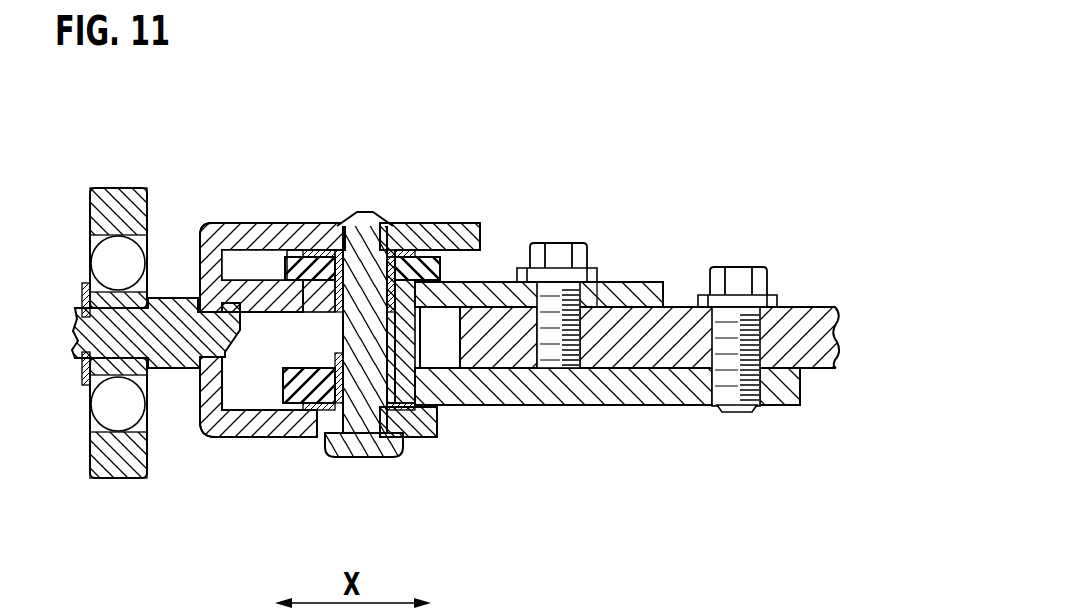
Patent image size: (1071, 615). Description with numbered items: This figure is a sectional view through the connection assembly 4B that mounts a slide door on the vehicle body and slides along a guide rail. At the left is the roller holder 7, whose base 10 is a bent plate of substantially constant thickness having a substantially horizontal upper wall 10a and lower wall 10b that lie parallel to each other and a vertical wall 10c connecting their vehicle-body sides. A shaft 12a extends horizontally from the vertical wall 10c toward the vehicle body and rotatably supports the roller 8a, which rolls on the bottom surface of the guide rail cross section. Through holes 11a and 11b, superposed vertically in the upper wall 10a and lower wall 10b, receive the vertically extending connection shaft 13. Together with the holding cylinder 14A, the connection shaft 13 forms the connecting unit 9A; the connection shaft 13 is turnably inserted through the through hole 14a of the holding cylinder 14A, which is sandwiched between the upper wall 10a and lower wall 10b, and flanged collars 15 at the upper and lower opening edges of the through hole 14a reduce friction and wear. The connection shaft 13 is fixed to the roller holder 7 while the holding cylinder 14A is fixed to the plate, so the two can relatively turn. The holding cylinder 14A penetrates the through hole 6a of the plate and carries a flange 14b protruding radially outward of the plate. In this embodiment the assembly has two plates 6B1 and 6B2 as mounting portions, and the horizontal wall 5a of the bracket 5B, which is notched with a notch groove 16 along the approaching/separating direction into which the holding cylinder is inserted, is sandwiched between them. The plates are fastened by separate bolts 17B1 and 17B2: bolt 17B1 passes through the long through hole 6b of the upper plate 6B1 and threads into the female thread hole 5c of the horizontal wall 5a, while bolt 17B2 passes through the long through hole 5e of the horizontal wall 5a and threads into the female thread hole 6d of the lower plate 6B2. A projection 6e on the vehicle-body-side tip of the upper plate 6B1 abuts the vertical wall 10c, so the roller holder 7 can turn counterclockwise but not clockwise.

The roller 8a is at (118, 187).
The roller holder 7 is at (206, 229).
The base 10 is at (227, 224).
The upper wall 10a is at (238, 223).
The lower wall 10b is at (263, 438).
The vertical wall 10c is at (232, 390).
The connection assembly 4B is at (280, 164).
The collar 15 is at (319, 248).
The through hole 11a is at (357, 216).
The through hole 11b is at (370, 457).
The connecting unit 9A is at (448, 118).
The connection shaft 13 is at (383, 223).
The holding cylinder 14A is at (428, 249).
The flange 14b is at (458, 223).
The through hole 14a is at (396, 430).
The through hole 6a is at (440, 288).
The projection 6e is at (218, 263).
The long through hole 6b is at (590, 280).
The upper plate 6B1 is at (676, 292).
The lower plate 6B2 is at (778, 405).
The female thread hole 6d is at (733, 412).
The bolt 17B1 is at (563, 255).
The bolt 17B2 is at (740, 270).
The horizontal wall 5a is at (810, 310).
The bracket 5B is at (648, 337).
The female thread hole 5c is at (538, 350).
The long through hole 5e is at (700, 405).
The notch groove 16 is at (453, 406).
The shaft 12a is at (162, 369).